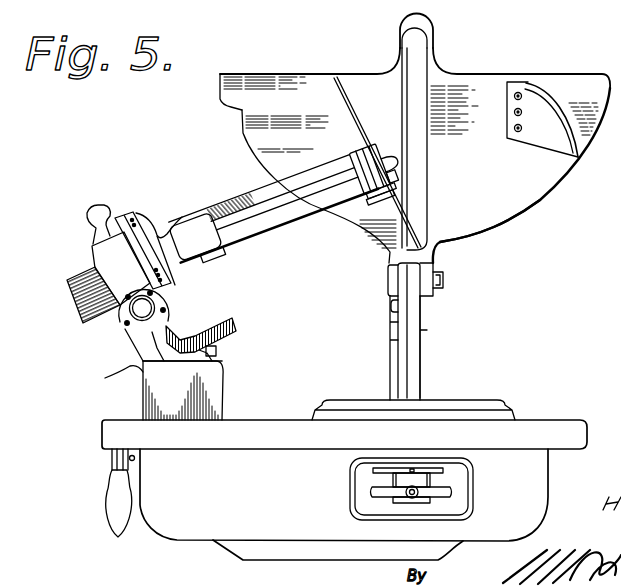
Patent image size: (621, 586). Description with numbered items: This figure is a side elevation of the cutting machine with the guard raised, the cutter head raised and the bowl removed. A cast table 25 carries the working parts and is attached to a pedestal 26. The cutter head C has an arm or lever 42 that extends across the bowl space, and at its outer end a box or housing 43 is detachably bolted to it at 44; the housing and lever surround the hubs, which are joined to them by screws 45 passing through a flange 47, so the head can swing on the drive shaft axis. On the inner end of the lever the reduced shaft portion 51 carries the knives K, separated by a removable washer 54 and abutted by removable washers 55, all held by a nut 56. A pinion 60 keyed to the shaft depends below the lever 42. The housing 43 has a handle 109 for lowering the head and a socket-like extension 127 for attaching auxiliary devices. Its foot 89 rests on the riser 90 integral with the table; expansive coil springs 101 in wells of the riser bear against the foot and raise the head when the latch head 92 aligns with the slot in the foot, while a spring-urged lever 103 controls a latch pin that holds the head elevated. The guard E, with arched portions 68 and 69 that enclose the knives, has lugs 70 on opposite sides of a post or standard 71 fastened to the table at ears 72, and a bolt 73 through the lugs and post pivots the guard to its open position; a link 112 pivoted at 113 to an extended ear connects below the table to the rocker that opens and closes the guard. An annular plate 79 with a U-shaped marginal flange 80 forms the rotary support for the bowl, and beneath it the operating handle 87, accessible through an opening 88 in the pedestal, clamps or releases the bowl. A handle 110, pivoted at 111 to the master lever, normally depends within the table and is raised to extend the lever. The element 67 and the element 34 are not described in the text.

The guard E is at (470, 75).
The knives K is at (344, 92).
The cutter head C is at (188, 230).
The arched portion 68 is at (434, 36).
The arched portion 69 is at (250, 137).
The housing bottom wall 67 is at (505, 211).
The ears 72 is at (597, 139).
The nut 56 is at (372, 156).
The reduced shaft portion 51 is at (400, 164).
The removable washers 55 is at (393, 182).
The removable washer 54 is at (380, 194).
The pinion 60 is at (217, 258).
The arm or lever 42 is at (160, 228).
The box or housing 43 is at (100, 257).
The socket-like extension 127 is at (84, 305).
The handle 109 is at (105, 208).
The screws 45 is at (156, 301).
The flange 47 is at (125, 330).
The bolts 44 is at (176, 327).
The foot 89 is at (233, 326).
The expansive coil springs 101 is at (217, 349).
The bracket 34 is at (146, 338).
The latch head 92 is at (208, 363).
The lever 103 is at (126, 389).
The riser 90 is at (224, 393).
The lugs 70 is at (432, 263).
The bolt 73 is at (445, 282).
The pivot 113 is at (393, 304).
The post or standard 71 is at (425, 312).
The link 112 is at (390, 357).
The marginal flange 80 is at (471, 402).
The annular plate 79 is at (453, 415).
The table 25 is at (543, 428).
The pedestal 26 is at (550, 477).
The opening 88 is at (366, 487).
The operating handle 87 is at (452, 488).
The pivot 111 is at (135, 459).
The handle 110 is at (116, 509).